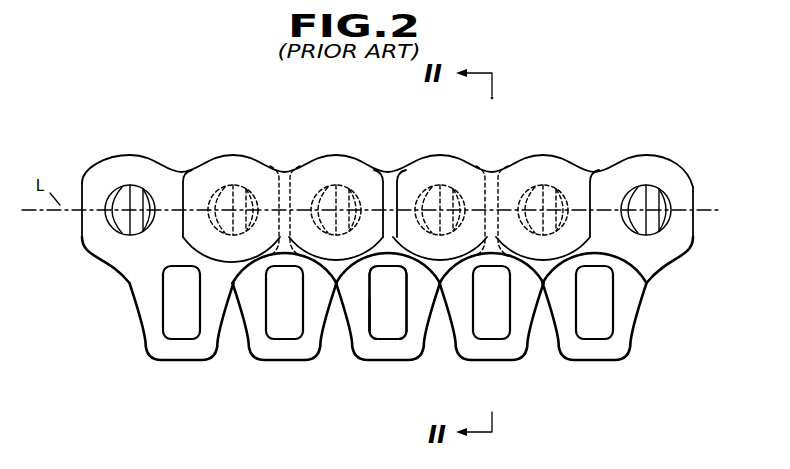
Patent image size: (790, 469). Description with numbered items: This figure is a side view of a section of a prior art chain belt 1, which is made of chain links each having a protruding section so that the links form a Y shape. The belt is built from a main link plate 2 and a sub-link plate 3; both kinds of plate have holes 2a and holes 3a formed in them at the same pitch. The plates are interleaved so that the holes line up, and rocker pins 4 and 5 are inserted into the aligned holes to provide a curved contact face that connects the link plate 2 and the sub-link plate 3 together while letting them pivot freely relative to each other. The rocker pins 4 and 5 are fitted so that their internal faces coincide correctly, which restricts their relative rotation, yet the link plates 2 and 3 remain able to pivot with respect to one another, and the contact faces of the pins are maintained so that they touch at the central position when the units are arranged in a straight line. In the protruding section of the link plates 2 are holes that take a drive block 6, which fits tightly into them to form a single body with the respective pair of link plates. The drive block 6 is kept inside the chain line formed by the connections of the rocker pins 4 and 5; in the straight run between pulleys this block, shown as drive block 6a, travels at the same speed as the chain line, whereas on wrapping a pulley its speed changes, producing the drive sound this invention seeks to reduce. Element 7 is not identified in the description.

The chain belt 1 is at (181, 138).
The main link plate 2 is at (177, 364).
The holes 2a is at (243, 182).
The sub-link plate 3 is at (283, 180).
The holes 3a is at (214, 186).
The rocker pin 4 is at (140, 188).
The rocker pin 5 is at (108, 190).
The drive block 6 is at (168, 318).
The drive block 6a is at (413, 330).
The slot edge 7 is at (371, 324).